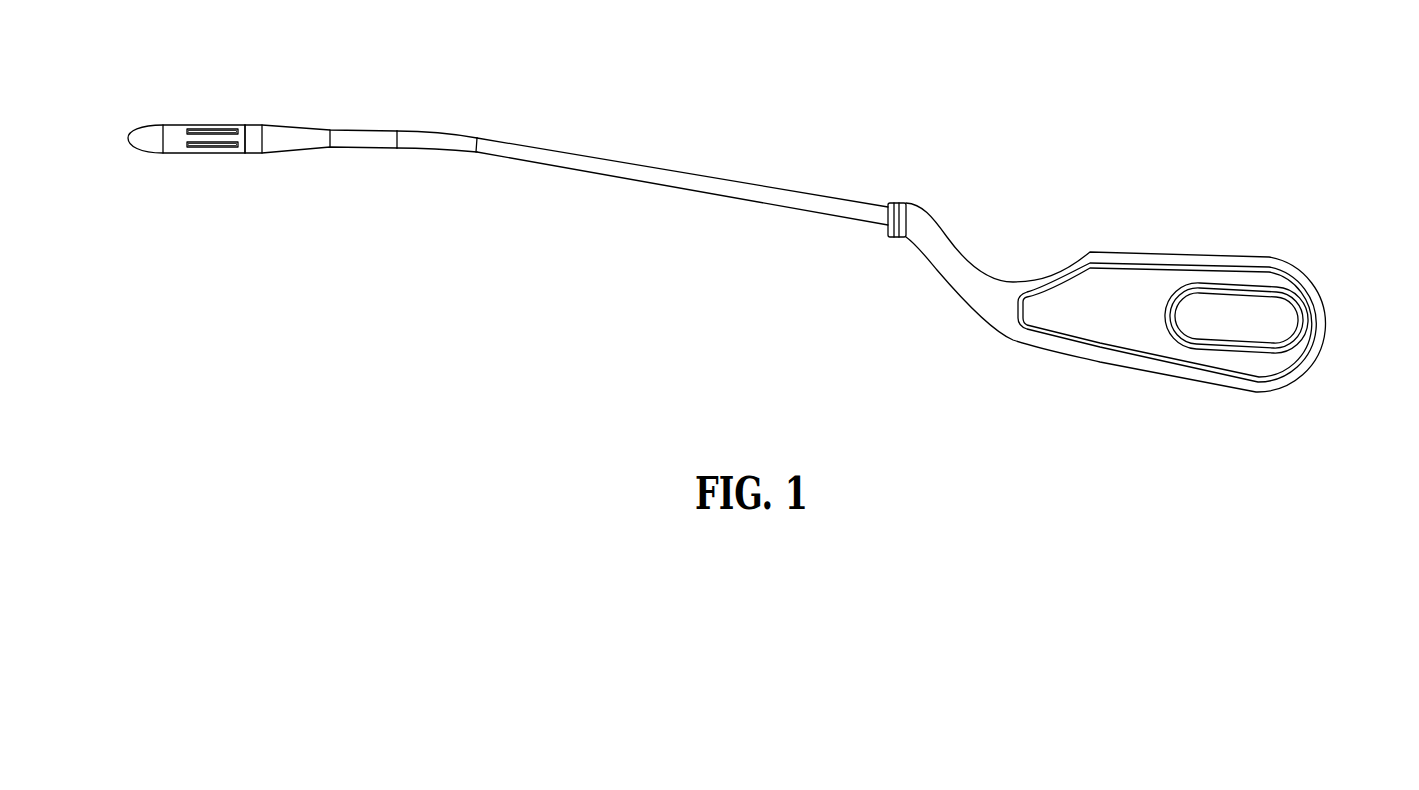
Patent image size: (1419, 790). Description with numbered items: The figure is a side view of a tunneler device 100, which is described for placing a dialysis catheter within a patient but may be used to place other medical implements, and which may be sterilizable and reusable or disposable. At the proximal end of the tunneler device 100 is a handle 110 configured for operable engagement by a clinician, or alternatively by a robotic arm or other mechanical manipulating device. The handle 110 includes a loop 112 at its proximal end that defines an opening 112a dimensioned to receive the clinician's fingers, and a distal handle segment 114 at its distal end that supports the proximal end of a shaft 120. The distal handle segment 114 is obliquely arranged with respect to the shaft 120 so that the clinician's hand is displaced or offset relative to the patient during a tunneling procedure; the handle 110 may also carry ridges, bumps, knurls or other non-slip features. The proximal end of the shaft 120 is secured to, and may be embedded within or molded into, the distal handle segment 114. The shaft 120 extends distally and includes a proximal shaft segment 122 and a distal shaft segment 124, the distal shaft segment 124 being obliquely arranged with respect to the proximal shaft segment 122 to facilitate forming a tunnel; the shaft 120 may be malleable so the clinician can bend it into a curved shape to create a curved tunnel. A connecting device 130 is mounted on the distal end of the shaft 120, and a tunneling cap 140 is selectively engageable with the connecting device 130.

The tunneler device 100 is at (898, 56).
The handle 110 is at (1153, 240).
The loop 112 is at (1256, 256).
The opening 112a is at (1282, 340).
The distal handle segment 114 is at (949, 234).
The shaft 120 is at (690, 166).
The proximal shaft segment 122 is at (803, 195).
The distal shaft segment 124 is at (430, 130).
The connecting device 130 is at (297, 126).
The tunneling cap 140 is at (177, 124).